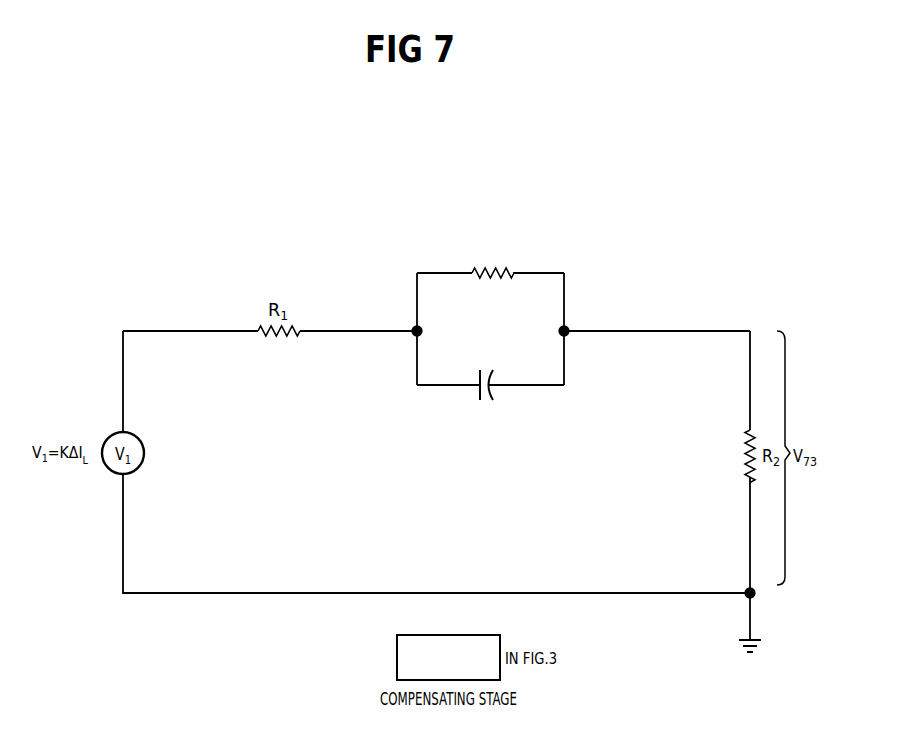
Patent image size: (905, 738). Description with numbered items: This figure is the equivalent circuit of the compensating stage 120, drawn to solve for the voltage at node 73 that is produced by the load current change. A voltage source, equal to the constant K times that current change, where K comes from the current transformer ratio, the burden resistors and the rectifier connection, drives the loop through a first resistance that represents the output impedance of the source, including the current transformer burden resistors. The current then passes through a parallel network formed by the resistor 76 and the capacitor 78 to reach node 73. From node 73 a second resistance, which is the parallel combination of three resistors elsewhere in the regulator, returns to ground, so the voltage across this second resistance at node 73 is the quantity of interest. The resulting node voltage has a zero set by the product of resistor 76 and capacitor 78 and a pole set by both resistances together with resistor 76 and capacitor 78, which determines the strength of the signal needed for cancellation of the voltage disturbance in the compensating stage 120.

The node 73 is at (645, 329).
The resistor R76 76 is at (490, 260).
The capacitor C78 78 is at (490, 399).
The compensating stage 120 is at (448, 657).